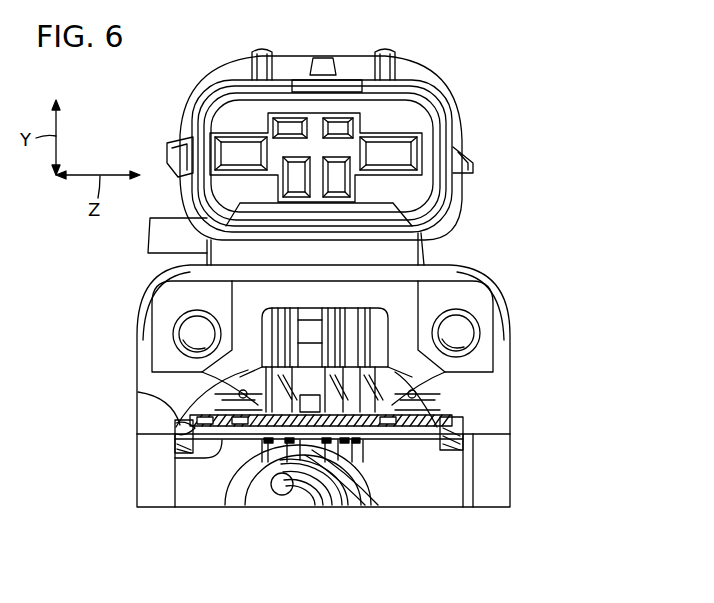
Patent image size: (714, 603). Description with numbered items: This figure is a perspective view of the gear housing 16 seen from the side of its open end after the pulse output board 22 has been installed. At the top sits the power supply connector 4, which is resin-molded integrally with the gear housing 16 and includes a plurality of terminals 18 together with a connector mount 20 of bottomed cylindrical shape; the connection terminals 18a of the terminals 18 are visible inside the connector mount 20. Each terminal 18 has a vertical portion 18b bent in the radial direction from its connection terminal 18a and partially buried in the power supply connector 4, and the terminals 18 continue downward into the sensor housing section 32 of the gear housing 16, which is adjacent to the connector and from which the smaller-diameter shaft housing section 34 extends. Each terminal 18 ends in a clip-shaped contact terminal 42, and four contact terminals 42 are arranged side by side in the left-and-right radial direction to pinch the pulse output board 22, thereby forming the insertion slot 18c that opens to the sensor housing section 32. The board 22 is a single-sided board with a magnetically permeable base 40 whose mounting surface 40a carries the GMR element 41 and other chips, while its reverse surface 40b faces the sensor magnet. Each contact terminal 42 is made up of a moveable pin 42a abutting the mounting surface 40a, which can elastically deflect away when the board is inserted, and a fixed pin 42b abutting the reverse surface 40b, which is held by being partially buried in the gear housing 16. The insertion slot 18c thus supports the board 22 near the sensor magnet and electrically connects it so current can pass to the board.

The power supply connector 4 is at (440, 72).
The connector mount 20 is at (403, 112).
The connection terminal 18a is at (352, 182).
The terminals 18 is at (363, 323).
The gear housing 16 is at (137, 302).
The vertical portion 18b is at (373, 353).
The fixed pin 42b is at (385, 403).
The pulse output board 22 is at (452, 430).
The insertion slot 18c is at (382, 443).
The mounting surface 40a is at (202, 420).
The base 40 is at (176, 436).
The reverse surface 40b is at (205, 458).
The sensor housing section 32 is at (200, 490).
The contact terminal 42 is at (287, 446).
The GMR element 41 is at (302, 472).
The shaft housing section 34 is at (290, 496).
The moveable pin 42a is at (380, 446).